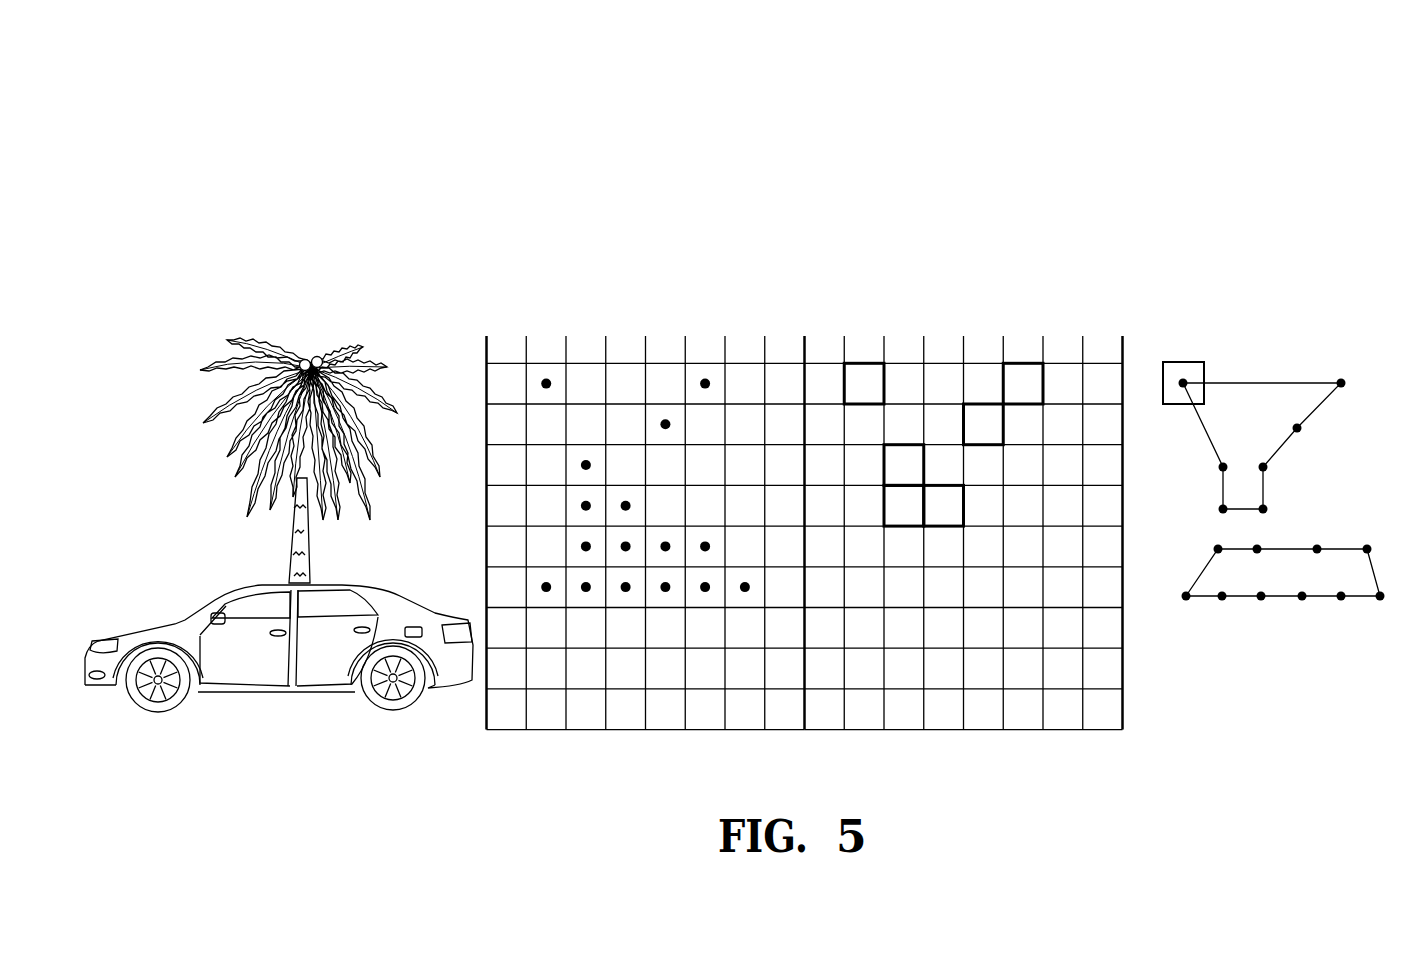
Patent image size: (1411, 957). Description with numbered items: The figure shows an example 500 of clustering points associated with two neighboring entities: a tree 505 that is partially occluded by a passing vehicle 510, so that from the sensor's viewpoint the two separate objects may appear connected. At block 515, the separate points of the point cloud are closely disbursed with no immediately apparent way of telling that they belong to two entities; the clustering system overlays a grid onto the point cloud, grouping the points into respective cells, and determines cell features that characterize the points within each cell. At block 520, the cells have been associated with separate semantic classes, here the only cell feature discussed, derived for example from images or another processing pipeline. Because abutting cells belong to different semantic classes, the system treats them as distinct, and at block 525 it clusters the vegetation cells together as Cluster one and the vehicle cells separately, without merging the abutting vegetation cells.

The example 500 is at (1040, 147).
The tree 505 is at (365, 342).
The vehicle 510 is at (285, 692).
The block 515 is at (663, 330).
The block 520 is at (938, 330).
The block 525 is at (1268, 330).